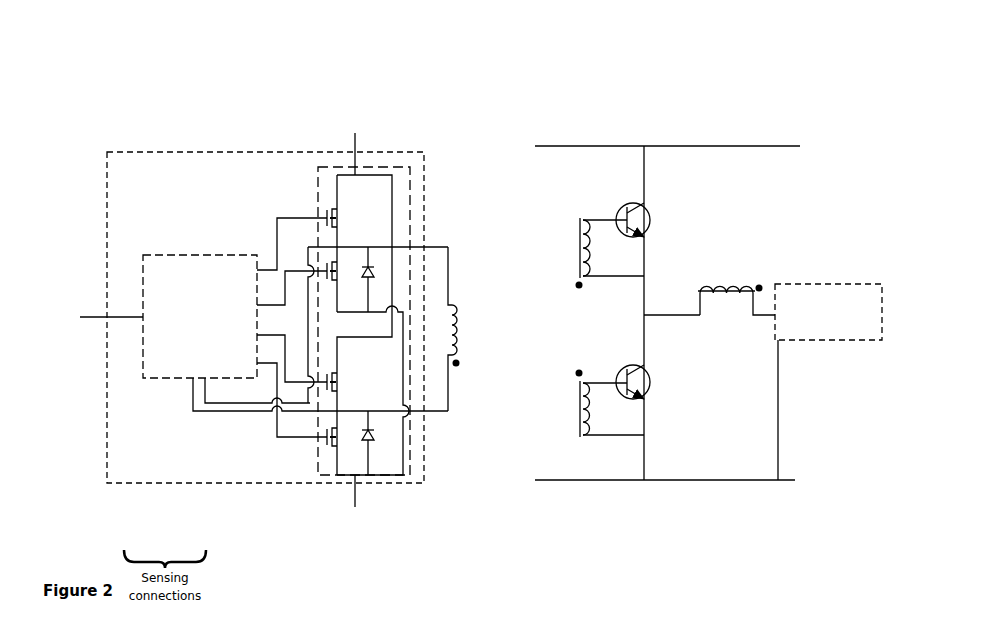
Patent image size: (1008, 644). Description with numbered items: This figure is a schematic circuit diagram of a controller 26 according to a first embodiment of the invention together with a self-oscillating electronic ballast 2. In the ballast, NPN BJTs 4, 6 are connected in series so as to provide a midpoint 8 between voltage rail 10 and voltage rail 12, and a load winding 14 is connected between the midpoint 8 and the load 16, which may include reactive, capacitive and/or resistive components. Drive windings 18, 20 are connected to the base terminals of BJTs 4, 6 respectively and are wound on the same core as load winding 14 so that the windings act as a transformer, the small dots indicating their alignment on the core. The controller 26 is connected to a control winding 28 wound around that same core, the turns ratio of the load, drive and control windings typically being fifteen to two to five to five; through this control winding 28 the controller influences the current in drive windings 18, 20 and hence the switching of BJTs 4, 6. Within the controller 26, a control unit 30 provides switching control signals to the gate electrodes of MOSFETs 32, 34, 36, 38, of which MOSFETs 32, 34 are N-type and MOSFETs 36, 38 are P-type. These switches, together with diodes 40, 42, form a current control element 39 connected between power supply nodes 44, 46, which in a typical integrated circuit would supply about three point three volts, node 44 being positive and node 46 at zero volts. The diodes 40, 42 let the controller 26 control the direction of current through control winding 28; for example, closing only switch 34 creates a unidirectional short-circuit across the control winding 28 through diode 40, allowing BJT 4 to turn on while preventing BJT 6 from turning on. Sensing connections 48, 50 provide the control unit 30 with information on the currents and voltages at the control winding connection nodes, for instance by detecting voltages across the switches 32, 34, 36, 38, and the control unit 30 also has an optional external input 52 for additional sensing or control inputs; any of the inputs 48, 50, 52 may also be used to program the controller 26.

The self-oscillating electronic ballast 2 is at (534, 125).
The NPN BJT 4 is at (618, 207).
The NPN BJT 6 is at (626, 398).
The midpoint 8 is at (675, 315).
The voltage rail 10 is at (557, 146).
The voltage rail 12 is at (545, 482).
The load winding 14 is at (742, 285).
The load 16 is at (768, 482).
The drive winding 18 is at (585, 207).
The drive winding 20 is at (589, 447).
The controller 26 is at (150, 133).
The control winding 28 is at (463, 296).
The control unit 30 is at (197, 255).
The MOSFET 32 is at (322, 202).
The MOSFET 34 is at (315, 448).
The MOSFET 36 is at (320, 262).
The MOSFET 38 is at (315, 393).
The current control element 39 is at (411, 442).
The diode 40 is at (377, 268).
The diode 42 is at (379, 440).
The power supply node 44 is at (357, 133).
The power supply node 46 is at (352, 497).
The sensing connection 48 is at (200, 413).
The sensing connection 50 is at (237, 404).
The external input 52 is at (97, 316).